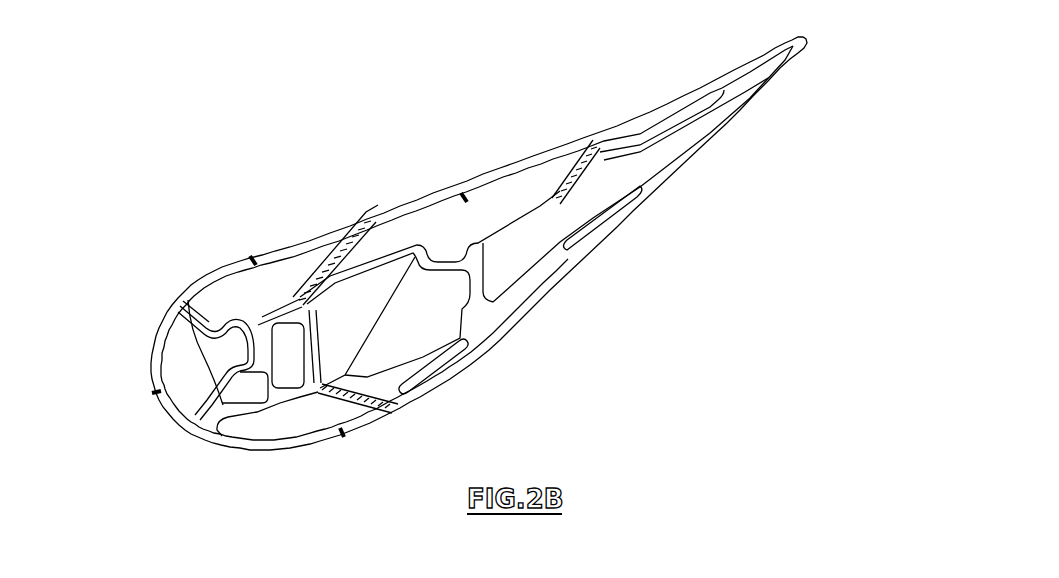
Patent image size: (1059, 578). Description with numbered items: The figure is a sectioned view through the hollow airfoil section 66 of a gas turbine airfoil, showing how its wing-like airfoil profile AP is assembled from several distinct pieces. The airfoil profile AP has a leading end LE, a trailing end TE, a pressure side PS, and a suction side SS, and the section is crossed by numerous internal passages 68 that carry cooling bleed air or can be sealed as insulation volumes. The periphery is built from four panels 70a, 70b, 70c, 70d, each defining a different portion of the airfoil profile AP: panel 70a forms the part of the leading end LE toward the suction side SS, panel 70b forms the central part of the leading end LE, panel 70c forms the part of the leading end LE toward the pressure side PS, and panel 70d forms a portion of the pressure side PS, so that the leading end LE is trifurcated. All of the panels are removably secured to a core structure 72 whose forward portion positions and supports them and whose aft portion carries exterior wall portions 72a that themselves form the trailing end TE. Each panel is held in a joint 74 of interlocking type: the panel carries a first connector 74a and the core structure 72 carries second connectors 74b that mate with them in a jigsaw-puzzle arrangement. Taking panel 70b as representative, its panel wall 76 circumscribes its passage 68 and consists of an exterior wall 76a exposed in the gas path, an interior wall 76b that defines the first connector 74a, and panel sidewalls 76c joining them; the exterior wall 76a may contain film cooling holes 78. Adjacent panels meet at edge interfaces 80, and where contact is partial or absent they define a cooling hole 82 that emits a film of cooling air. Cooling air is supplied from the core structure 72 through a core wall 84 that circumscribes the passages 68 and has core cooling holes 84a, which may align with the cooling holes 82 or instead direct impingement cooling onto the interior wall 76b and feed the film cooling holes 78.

The airfoil section 66 is at (212, 258).
The internal passages 68 is at (230, 297).
The panel 70a is at (259, 452).
The panel 70b is at (150, 372).
The panel 70c is at (190, 283).
The panel 70d is at (500, 178).
The core structure 72 is at (533, 304).
The exterior wall portions 72a is at (650, 117).
The joint 74 is at (347, 393).
The first connector 74a is at (288, 300).
The second connectors 74b is at (300, 305).
The panel wall 76 is at (185, 425).
The exterior wall 76a is at (185, 340).
The interior wall 76b is at (195, 348).
The panel sidewalls 76c is at (165, 316).
The cooling holes 78 is at (252, 257).
The edge interfaces 80 is at (365, 228).
The cooling hole 82 is at (407, 380).
The core wall 84 is at (282, 405).
The core cooling holes 84a is at (340, 378).
The pressure side PS is at (420, 190).
The suction side SS is at (462, 375).
The leading end LE is at (140, 395).
The trailing end TE is at (775, 103).
The airfoil profile AP is at (280, 300).